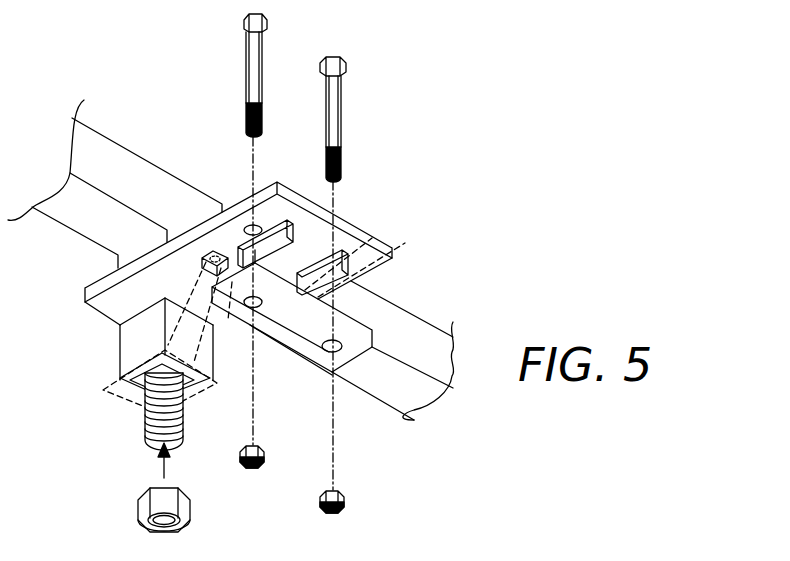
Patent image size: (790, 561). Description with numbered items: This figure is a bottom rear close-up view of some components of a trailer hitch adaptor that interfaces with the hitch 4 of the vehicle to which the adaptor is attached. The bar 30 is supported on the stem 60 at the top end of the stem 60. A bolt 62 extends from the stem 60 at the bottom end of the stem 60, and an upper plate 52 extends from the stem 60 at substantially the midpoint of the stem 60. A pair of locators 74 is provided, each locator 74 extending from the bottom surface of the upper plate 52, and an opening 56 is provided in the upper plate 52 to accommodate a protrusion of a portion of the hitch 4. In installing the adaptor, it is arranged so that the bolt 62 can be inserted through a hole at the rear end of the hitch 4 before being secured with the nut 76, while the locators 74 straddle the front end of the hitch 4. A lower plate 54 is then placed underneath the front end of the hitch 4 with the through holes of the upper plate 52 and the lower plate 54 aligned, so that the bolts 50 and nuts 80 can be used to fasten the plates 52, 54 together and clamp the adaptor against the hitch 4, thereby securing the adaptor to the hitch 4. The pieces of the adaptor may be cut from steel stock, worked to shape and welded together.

The hitch 4 is at (210, 393).
The bar 30 is at (362, 383).
The bolts 50 is at (244, 23).
The upper plate 52 is at (282, 192).
The lower plate 54 is at (362, 323).
The opening 56 is at (208, 257).
The stem 60 is at (118, 260).
The bolt 62 is at (145, 408).
The locators 74 is at (294, 221).
The nut 76 is at (142, 505).
The nuts 80 is at (263, 453).